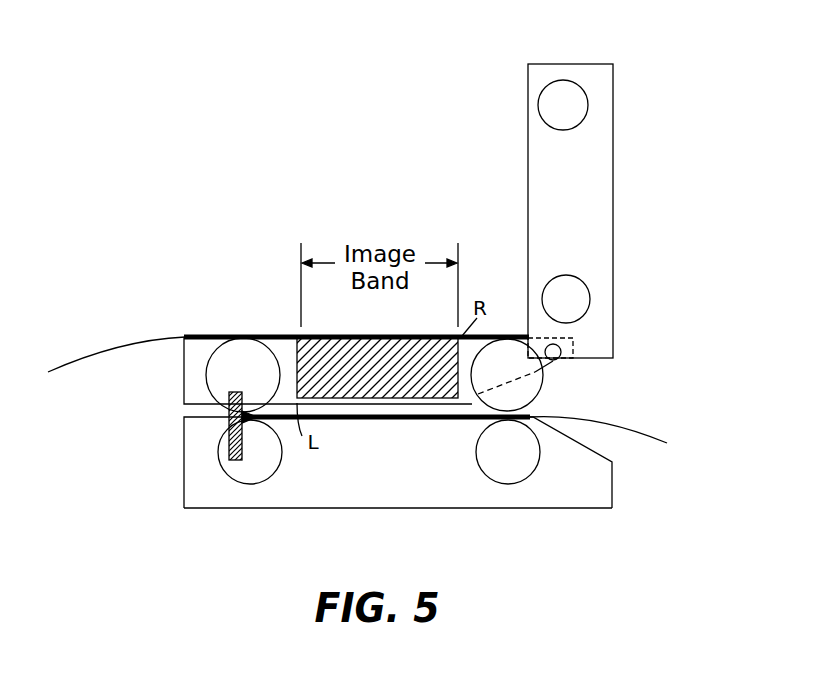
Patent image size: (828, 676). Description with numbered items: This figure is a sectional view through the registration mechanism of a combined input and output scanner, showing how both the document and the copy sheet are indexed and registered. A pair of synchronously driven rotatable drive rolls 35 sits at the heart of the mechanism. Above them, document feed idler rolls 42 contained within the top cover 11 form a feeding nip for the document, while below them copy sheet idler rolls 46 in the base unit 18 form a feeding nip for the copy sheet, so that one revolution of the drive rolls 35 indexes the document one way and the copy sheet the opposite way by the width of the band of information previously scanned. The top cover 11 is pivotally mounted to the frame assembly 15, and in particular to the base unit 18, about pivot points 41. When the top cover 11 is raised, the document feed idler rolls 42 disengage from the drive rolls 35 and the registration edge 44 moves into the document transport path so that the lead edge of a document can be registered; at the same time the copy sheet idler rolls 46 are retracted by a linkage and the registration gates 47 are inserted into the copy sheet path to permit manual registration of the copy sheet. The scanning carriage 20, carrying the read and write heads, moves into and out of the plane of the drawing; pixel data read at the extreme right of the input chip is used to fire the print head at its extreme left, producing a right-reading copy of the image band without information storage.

The top cover 11 is at (613, 210).
The document feed idler rolls 42 is at (583, 105).
The registration edge 44 is at (538, 334).
The pivot points 41 is at (558, 360).
The drive rolls 35 is at (207, 373).
The scanning carriage 20 is at (387, 387).
The registration gates 47 is at (227, 445).
The copy sheet idler rolls 46 is at (282, 463).
The base unit 18 is at (367, 511).
The frame assembly 15 is at (485, 500).